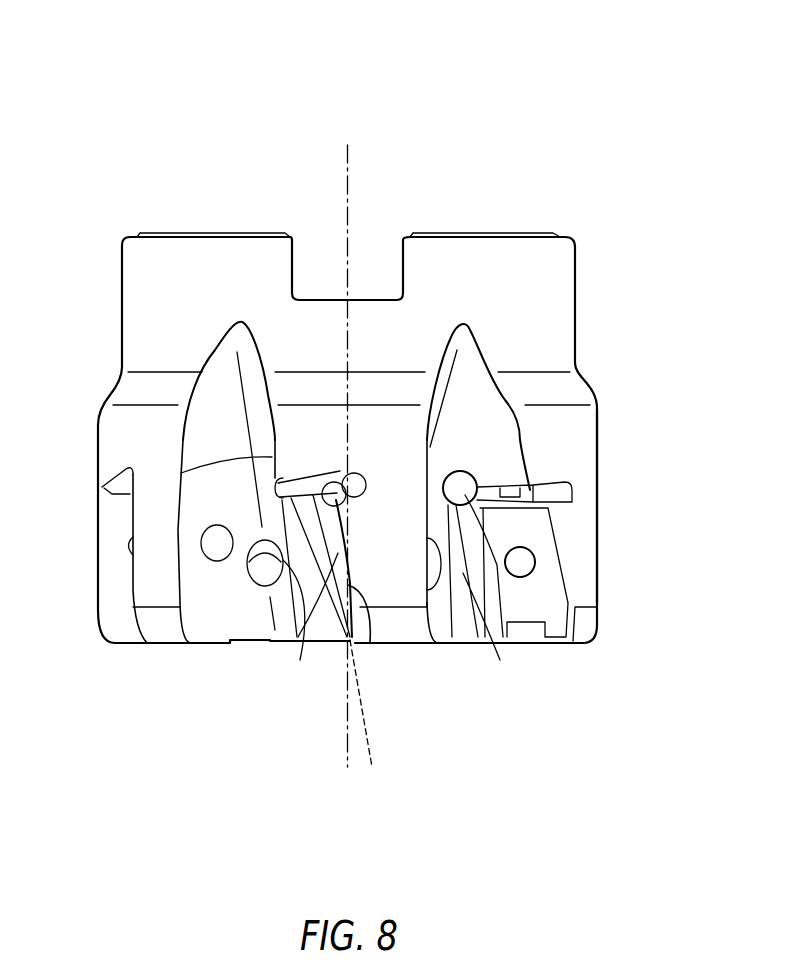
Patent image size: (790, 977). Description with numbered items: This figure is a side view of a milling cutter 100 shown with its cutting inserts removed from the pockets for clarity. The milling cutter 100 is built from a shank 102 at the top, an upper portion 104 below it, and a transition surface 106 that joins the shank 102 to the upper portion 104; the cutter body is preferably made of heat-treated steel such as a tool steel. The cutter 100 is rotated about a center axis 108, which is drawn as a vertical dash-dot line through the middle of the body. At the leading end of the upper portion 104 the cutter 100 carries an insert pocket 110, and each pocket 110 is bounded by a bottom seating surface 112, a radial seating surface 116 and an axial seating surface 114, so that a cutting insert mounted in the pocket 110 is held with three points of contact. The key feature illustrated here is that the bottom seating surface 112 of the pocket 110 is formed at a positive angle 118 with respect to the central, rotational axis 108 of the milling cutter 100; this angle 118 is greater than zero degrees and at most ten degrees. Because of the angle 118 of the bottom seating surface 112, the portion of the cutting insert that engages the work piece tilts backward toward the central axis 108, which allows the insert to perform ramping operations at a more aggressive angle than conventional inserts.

The milling cutter 100 is at (68, 72).
The shank 102 is at (577, 288).
The upper portion 104 is at (598, 508).
The transition surface 106 is at (577, 377).
The center axis 108 is at (347, 173).
The insert pocket 110 is at (573, 547).
The bottom seating surface 112 is at (307, 615).
The axial seating surface 114 is at (523, 492).
The radial seating surface 116 is at (498, 655).
The positive angle 118 is at (297, 735).